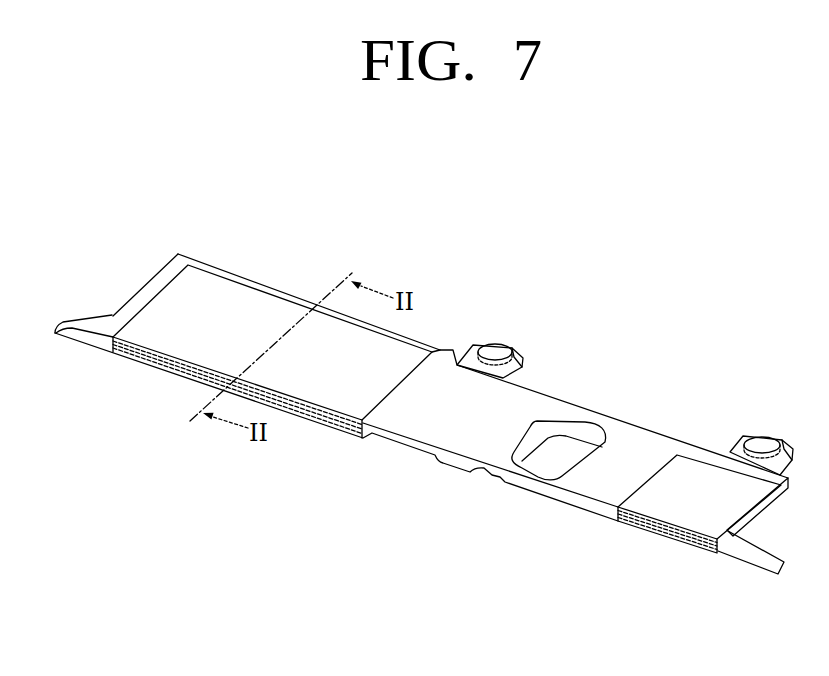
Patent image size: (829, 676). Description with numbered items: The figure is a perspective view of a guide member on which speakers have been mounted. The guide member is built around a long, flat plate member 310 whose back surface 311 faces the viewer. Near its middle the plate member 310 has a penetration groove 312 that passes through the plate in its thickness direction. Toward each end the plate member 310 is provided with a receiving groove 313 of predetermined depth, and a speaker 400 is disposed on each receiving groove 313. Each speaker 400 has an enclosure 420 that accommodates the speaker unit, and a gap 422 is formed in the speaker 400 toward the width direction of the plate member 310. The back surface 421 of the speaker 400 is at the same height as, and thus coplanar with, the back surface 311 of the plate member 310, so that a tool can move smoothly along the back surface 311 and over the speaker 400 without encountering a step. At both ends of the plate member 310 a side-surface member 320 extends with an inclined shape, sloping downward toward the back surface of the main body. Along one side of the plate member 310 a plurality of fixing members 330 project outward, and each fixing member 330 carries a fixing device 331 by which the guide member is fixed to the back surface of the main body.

The plate member 310 is at (396, 458).
The back surface of the plate member 311 is at (510, 413).
The penetration groove 312 is at (577, 435).
The receiving groove 313 is at (609, 498).
The side-surface member 320 is at (79, 369).
The fixing member 330 is at (454, 342).
The fixing device 331 is at (495, 344).
The speaker 400 is at (190, 399).
The enclosure 420 is at (615, 528).
The back surface of the speaker 421 is at (670, 477).
The gap 422 is at (657, 540).